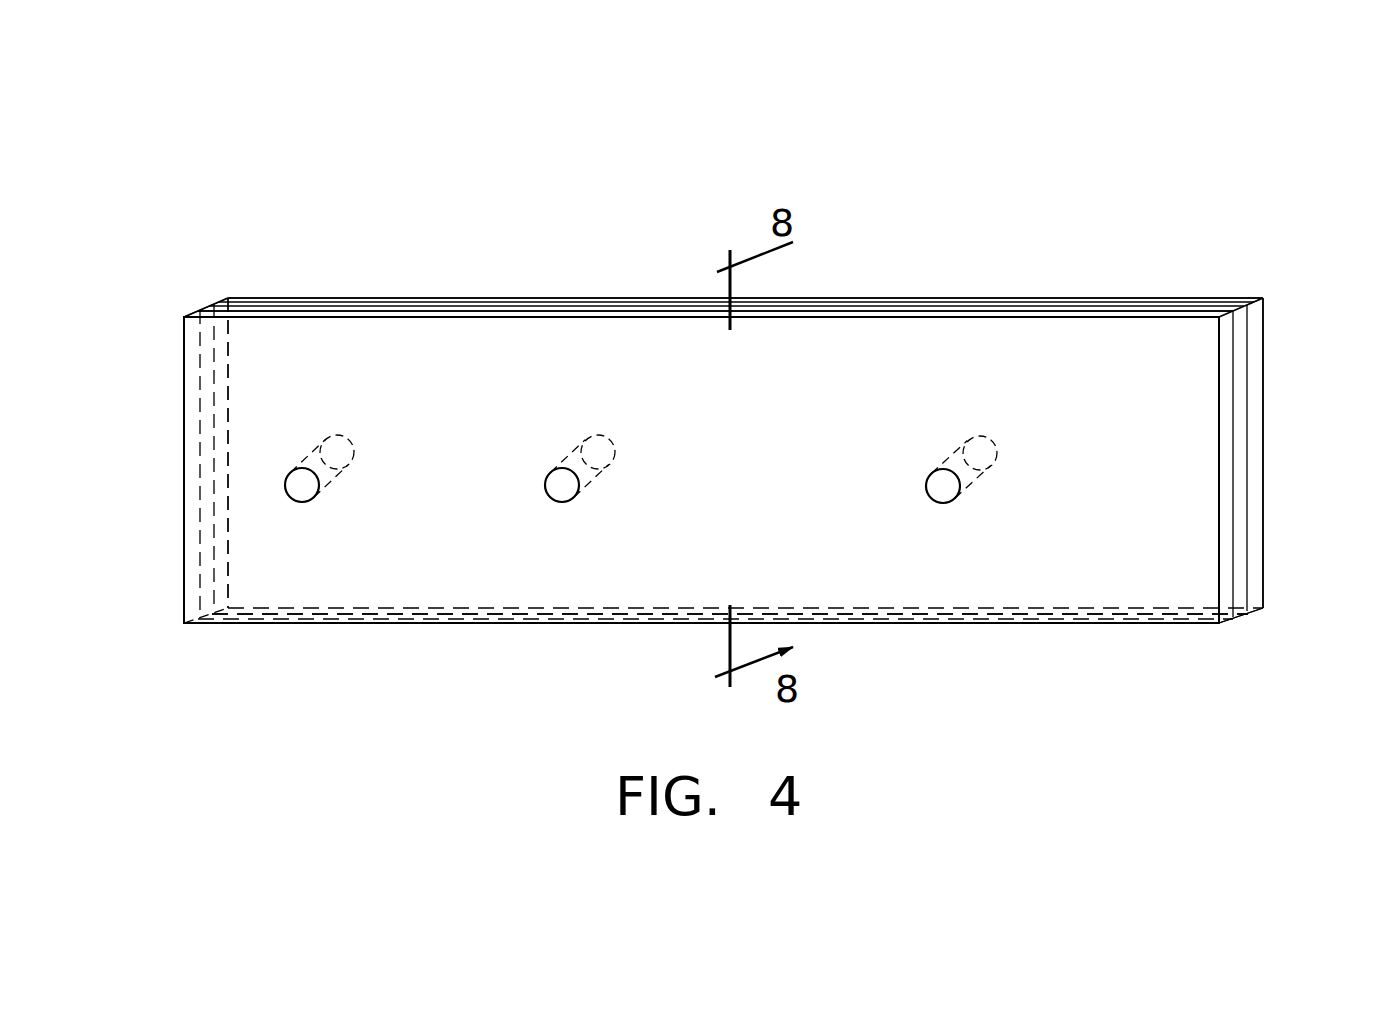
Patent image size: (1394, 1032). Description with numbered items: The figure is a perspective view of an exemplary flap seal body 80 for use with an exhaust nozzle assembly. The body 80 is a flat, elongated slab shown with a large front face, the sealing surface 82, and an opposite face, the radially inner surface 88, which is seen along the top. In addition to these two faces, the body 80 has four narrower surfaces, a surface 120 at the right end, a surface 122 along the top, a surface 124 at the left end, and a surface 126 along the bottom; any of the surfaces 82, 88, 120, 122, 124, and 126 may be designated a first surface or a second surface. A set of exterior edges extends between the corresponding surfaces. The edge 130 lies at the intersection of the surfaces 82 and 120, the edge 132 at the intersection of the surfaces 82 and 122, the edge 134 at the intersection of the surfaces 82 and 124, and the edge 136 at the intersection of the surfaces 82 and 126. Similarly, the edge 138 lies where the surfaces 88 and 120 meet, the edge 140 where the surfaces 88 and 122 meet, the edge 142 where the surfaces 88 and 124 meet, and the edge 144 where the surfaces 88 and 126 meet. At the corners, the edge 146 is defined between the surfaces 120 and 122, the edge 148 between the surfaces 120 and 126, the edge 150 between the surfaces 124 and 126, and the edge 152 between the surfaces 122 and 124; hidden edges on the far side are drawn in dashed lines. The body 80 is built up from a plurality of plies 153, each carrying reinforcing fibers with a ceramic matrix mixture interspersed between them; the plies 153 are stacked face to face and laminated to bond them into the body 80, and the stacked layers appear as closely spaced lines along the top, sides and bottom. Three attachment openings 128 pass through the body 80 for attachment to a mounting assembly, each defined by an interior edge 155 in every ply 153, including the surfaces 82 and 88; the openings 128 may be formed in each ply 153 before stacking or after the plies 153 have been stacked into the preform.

The flap seal body 80 is at (614, 190).
The sealing surface 82 is at (701, 470).
The radially inner surface 88 is at (485, 300).
The surface 120 is at (1246, 488).
The surface 122 is at (1140, 298).
The surface 124 is at (183, 333).
The surface 126 is at (1146, 628).
The openings 128 is at (340, 488).
The edge 130 is at (1222, 392).
The edge 132 is at (1035, 310).
The edge 134 is at (185, 403).
The edge 136 is at (885, 625).
The edge 138 is at (1263, 557).
The edge 140 is at (938, 300).
The edge 142 is at (228, 360).
The edge 144 is at (975, 605).
The edge 146 is at (1248, 310).
The edge 148 is at (1240, 615).
The edge 150 is at (200, 612).
The edge 152 is at (222, 300).
The plies 153 is at (1270, 437).
The interior edge 155 is at (303, 455).